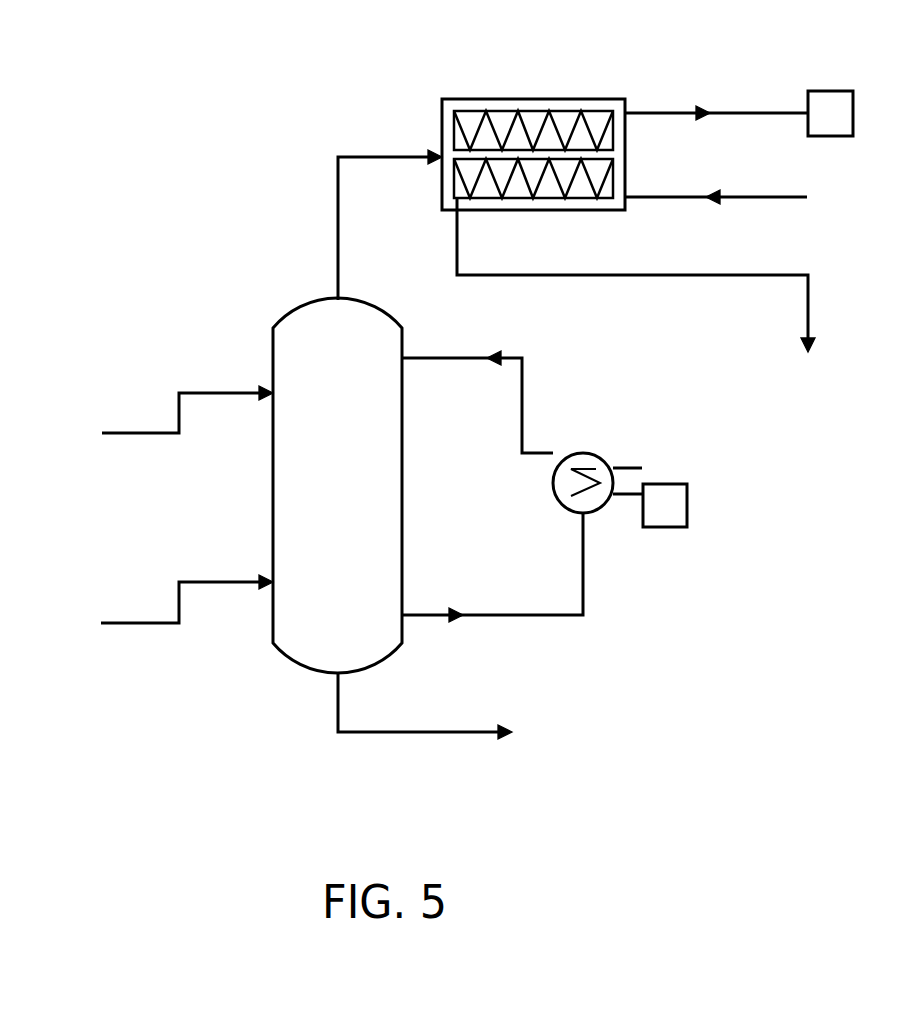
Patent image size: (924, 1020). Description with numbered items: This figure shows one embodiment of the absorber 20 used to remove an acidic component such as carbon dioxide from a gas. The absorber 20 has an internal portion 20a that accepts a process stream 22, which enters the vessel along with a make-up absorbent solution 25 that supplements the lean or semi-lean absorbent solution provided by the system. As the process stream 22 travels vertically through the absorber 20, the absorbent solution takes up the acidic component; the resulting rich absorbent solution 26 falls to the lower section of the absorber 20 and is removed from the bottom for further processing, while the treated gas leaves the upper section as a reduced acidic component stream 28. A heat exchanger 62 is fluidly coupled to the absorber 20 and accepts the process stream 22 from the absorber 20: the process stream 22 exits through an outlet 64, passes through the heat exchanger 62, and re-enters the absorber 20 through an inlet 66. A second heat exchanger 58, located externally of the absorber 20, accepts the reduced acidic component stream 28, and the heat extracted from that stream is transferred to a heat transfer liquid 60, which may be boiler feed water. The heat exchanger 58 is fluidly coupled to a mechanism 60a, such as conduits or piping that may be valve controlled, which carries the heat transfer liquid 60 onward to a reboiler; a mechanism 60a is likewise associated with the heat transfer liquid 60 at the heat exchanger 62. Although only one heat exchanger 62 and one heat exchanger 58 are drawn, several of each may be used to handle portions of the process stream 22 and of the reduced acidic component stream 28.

The absorber 20 is at (243, 490).
The internal portion 20a is at (383, 517).
The process stream 22 is at (147, 623).
The make-up absorbent solution 25 is at (148, 433).
The rich absorbent solution 26 is at (340, 702).
The reduced acidic component stream 28 is at (336, 238).
The heat exchanger 58 is at (532, 99).
The heat transfer liquid 60 is at (775, 197).
The mechanism 60a is at (830, 91).
The heat exchanger 62 is at (598, 508).
The outlet 64 is at (405, 617).
The inlet 66 is at (403, 352).